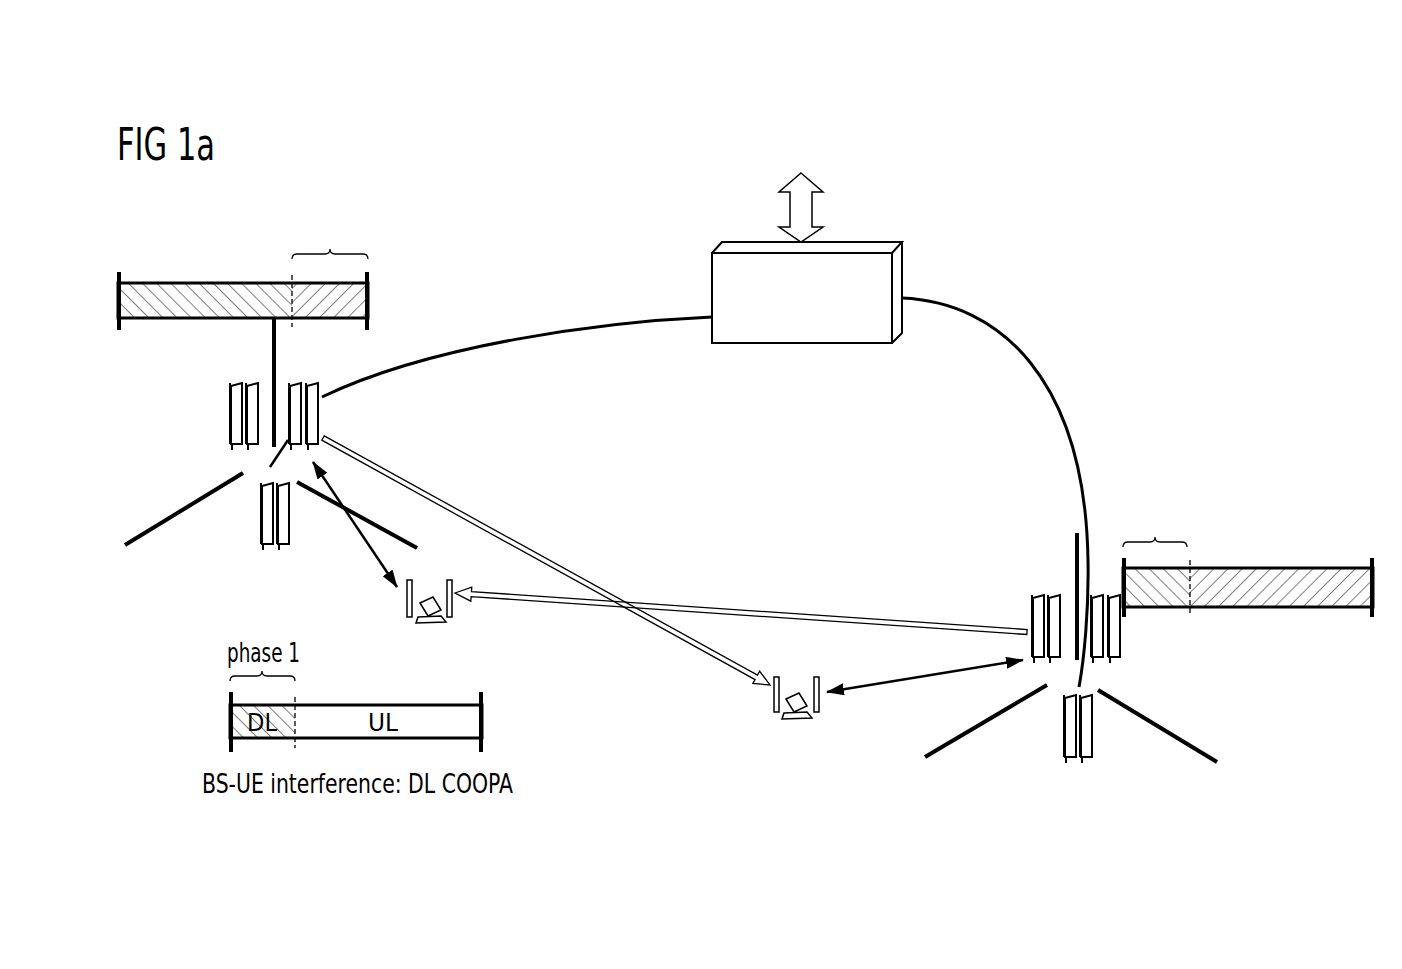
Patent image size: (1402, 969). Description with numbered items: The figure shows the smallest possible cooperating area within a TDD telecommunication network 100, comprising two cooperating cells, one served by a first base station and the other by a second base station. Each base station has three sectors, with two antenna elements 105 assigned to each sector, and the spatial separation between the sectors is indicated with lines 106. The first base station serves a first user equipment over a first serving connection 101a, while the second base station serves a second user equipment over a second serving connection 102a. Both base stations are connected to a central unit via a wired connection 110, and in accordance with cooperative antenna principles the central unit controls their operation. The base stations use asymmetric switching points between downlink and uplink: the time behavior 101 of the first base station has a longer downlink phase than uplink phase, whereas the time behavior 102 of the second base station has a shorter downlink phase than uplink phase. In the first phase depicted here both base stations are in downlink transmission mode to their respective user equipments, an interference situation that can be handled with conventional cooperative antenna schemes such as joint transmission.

The TDD telecommunication network cooperating area 100 is at (1112, 325).
The time behavior 101 is at (238, 238).
The time behavior 102 is at (1237, 540).
The first serving connection 101a is at (362, 543).
The second serving connection 102a is at (884, 695).
The antenna elements 105 is at (218, 410).
The lines 106 is at (146, 531).
The wired connection 110 is at (577, 334).